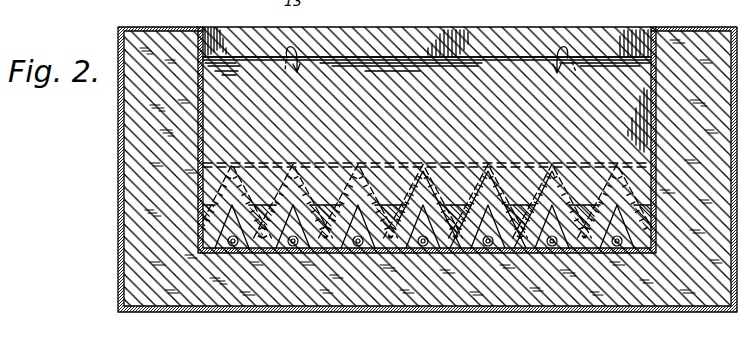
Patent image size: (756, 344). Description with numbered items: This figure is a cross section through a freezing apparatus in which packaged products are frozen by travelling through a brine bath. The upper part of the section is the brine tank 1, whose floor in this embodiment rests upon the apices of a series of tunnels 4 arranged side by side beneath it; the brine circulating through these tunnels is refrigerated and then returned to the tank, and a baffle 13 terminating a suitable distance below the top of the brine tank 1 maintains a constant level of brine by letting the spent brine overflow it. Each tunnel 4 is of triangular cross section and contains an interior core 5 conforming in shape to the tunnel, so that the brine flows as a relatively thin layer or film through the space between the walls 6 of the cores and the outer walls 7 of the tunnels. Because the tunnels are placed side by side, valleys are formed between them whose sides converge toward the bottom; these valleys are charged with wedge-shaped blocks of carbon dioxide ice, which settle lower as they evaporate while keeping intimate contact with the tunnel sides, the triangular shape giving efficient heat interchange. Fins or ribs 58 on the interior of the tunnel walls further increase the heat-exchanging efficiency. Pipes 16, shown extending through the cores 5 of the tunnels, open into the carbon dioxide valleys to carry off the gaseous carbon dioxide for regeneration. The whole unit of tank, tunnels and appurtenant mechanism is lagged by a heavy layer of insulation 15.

The brine tank 1 is at (374, 93).
The baffle 13 is at (525, 63).
The fins or ribs 58 is at (512, 166).
The tunnels 4 is at (206, 233).
The interior cores 5 is at (232, 228).
The walls of the cores 6 is at (212, 207).
The outer walls of the tunnels 7 is at (220, 204).
The layer of insulation 15 is at (122, 279).
The pipes 16 is at (237, 249).